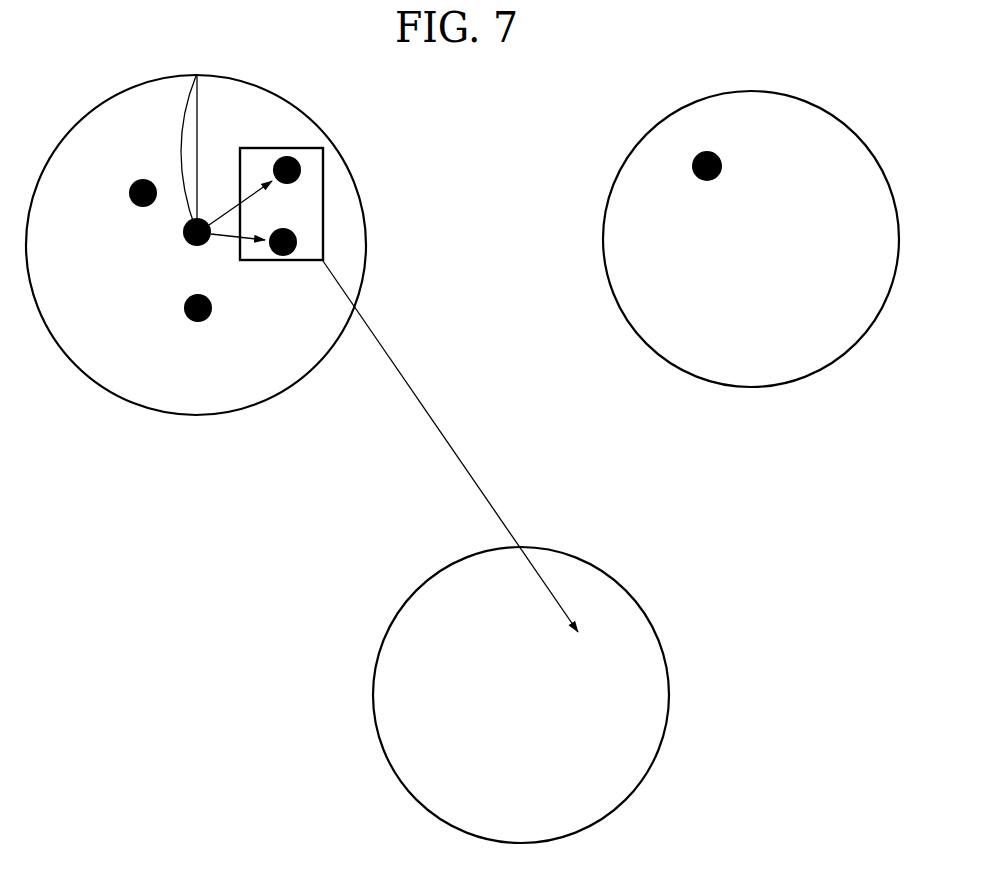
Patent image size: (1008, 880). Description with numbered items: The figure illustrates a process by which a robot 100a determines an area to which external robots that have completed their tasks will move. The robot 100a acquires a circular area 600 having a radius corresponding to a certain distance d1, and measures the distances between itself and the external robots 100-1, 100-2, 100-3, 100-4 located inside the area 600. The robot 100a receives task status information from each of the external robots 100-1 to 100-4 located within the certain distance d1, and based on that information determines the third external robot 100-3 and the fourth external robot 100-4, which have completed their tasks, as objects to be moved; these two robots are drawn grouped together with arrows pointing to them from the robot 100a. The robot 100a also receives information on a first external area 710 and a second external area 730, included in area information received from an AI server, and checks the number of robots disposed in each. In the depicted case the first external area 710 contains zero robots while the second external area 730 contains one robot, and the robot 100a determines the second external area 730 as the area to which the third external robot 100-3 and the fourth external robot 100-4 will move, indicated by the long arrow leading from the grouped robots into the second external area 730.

The circular area 600 is at (84, 117).
The certain distance d1 is at (181, 153).
The robot 100a is at (183, 237).
The first external robot 100-1 is at (140, 178).
The second external robot 100-2 is at (205, 322).
The third external robot 100-3 is at (280, 158).
The fourth external robot 100-4 is at (284, 256).
The first external area 710 is at (603, 217).
The second external area 730 is at (408, 596).